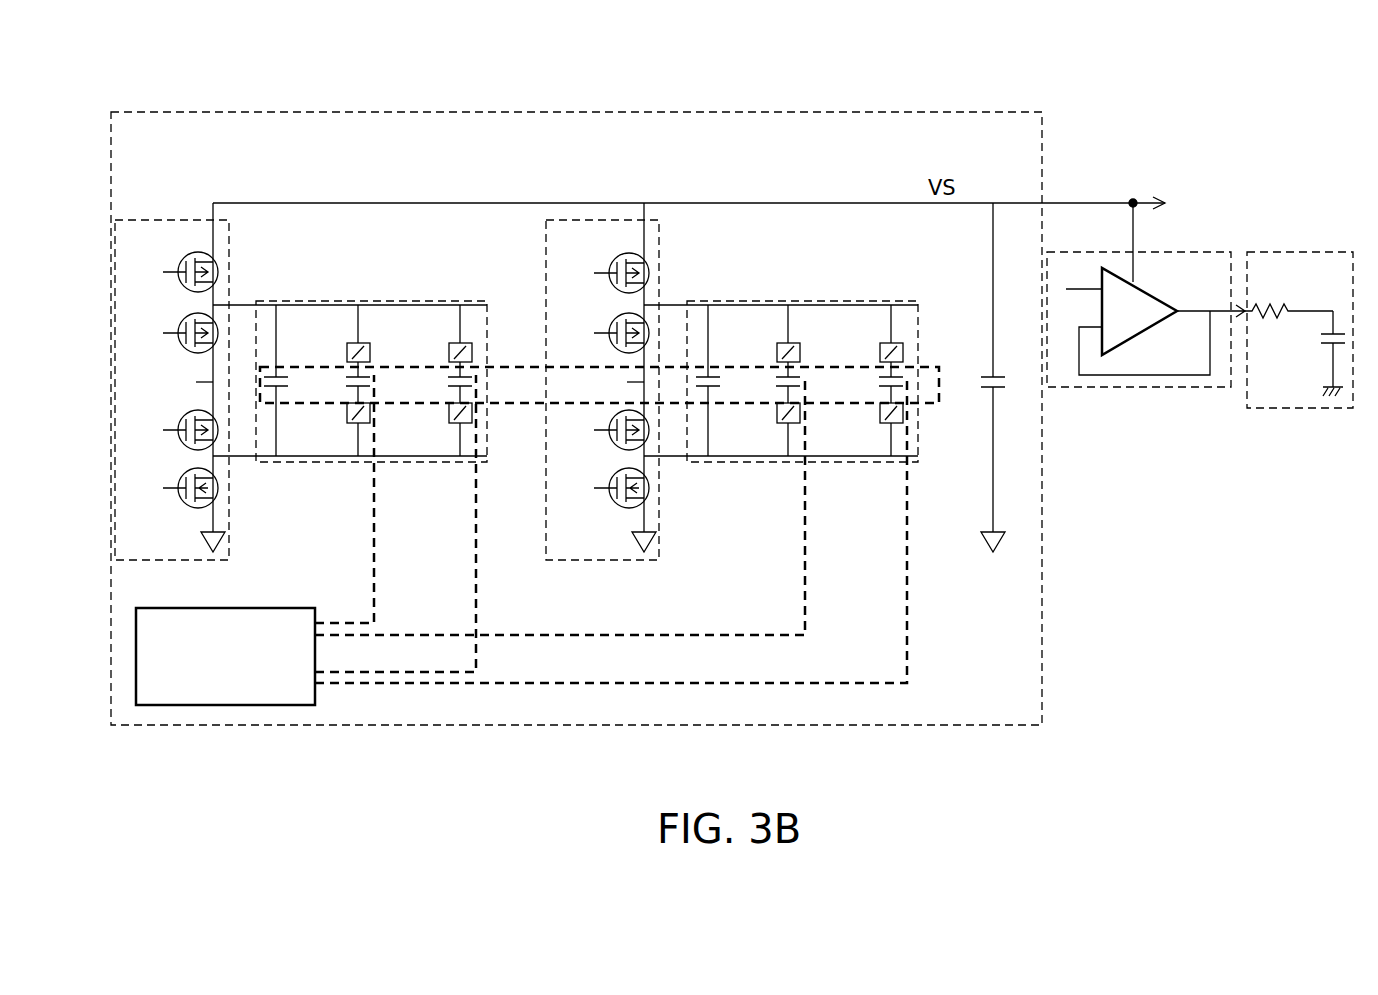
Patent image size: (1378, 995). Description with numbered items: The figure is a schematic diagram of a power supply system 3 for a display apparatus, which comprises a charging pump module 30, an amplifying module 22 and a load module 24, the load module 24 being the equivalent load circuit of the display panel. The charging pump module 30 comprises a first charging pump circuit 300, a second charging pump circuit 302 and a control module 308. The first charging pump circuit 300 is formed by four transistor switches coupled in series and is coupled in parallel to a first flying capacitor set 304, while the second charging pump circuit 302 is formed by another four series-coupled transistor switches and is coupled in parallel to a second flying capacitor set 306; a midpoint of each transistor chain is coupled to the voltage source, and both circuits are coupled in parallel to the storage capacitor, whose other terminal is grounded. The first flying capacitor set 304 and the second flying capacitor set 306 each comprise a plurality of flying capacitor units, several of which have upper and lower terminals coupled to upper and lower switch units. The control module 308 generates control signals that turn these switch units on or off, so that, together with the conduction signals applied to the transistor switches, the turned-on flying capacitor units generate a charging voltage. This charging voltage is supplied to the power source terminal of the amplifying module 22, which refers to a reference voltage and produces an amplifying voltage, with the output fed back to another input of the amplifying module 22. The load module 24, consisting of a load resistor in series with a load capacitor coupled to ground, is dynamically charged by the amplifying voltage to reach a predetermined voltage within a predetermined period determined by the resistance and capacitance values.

The power supply system 3 is at (214, 76).
The charging pump module 30 is at (487, 112).
The first charging pump circuit 300 is at (229, 234).
The second charging pump circuit 302 is at (659, 234).
The first flying capacitor set 304 is at (290, 301).
The second flying capacitor set 306 is at (721, 301).
The control module 308 is at (250, 608).
The amplifying module 22 is at (1212, 252).
The load module 24 is at (1318, 252).